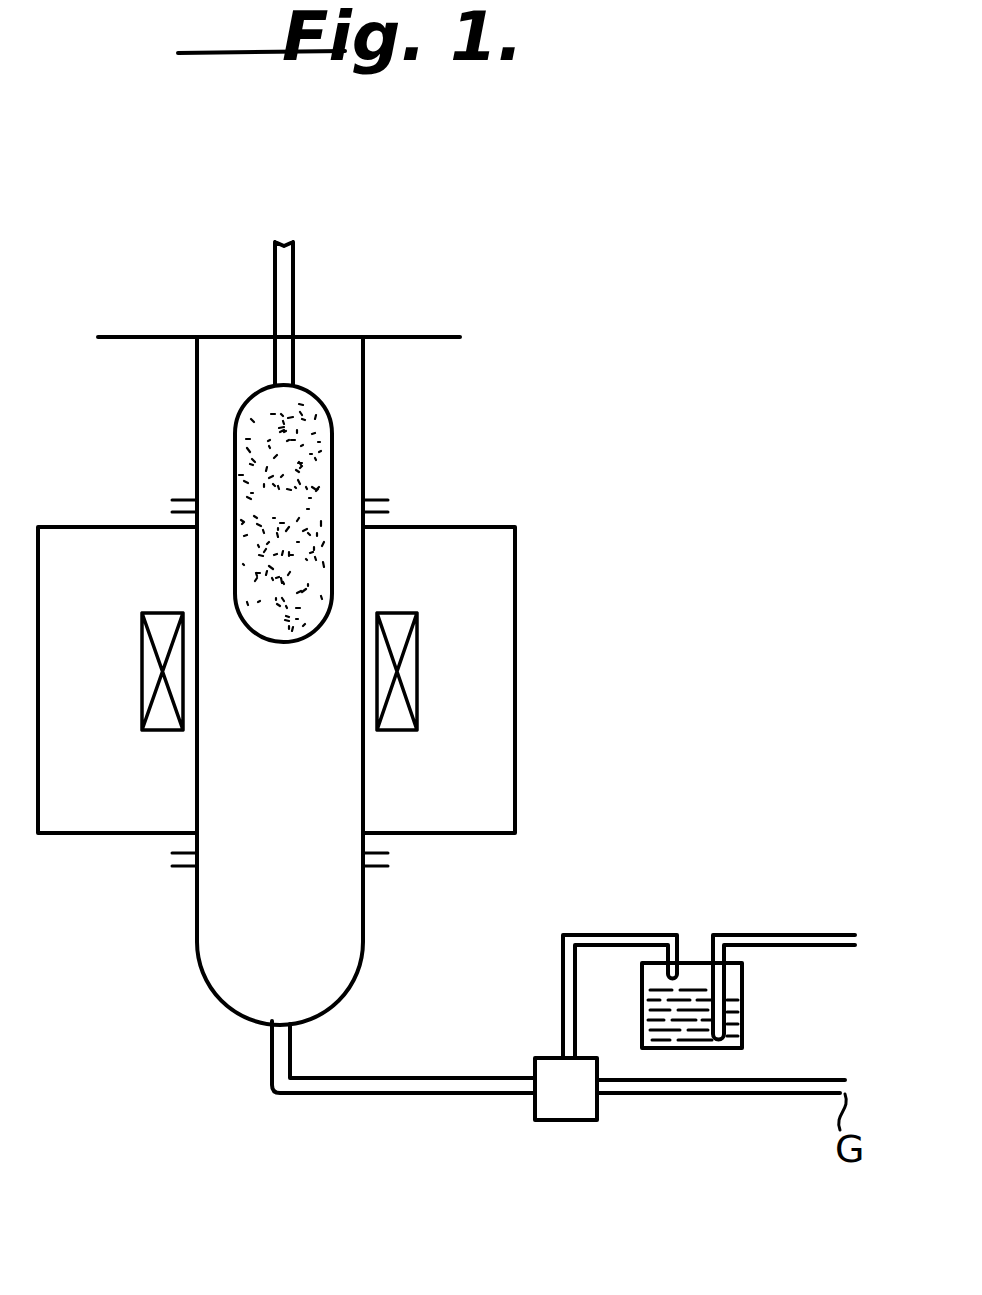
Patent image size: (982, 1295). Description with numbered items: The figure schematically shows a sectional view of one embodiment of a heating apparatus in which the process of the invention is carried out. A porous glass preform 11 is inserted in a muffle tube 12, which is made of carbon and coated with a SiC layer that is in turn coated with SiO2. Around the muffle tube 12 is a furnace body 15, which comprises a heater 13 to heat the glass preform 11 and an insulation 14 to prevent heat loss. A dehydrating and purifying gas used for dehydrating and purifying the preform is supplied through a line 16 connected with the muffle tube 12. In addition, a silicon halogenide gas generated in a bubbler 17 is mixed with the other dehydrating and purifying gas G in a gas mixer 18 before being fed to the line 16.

The porous glass preform 11 is at (258, 450).
The muffle tube 12 is at (331, 572).
The heater 13 is at (417, 677).
The insulation 14 is at (500, 806).
The furnace body 15 is at (516, 601).
The line 16 is at (415, 1094).
The bubbler 17 is at (742, 988).
The gas mixer 18 is at (568, 1122).